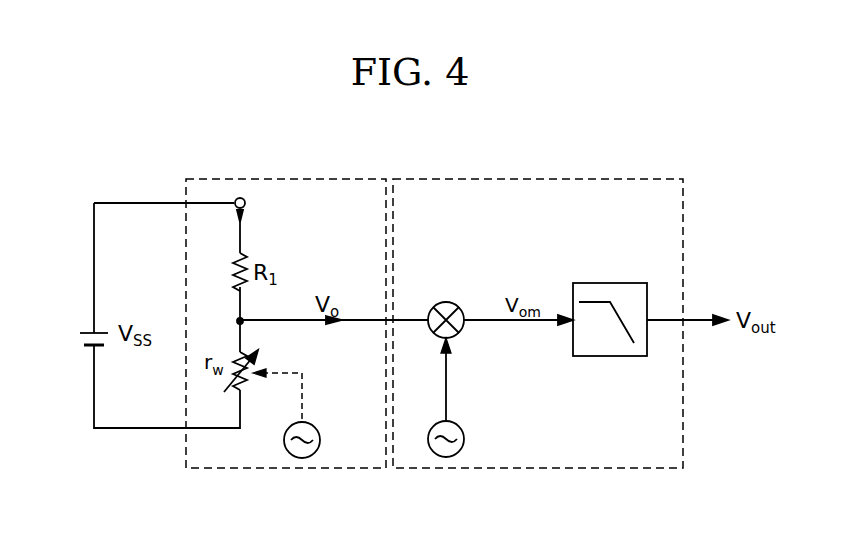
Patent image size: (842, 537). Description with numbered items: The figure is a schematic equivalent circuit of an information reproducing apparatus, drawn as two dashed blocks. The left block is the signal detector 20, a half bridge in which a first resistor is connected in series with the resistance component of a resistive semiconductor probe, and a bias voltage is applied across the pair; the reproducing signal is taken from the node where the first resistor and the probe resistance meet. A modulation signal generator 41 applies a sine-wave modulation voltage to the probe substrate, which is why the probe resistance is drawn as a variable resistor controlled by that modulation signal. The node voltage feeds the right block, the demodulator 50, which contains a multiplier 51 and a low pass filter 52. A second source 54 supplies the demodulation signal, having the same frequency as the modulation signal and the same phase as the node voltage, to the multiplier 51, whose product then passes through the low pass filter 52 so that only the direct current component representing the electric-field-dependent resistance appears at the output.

The signal detector 20 is at (331, 177).
The demodulator 50 is at (562, 177).
The modulation signal generator 41 is at (320, 440).
The multiplier 51 is at (436, 334).
The LPF 52 is at (610, 357).
The sub-voltage source 54 is at (464, 439).